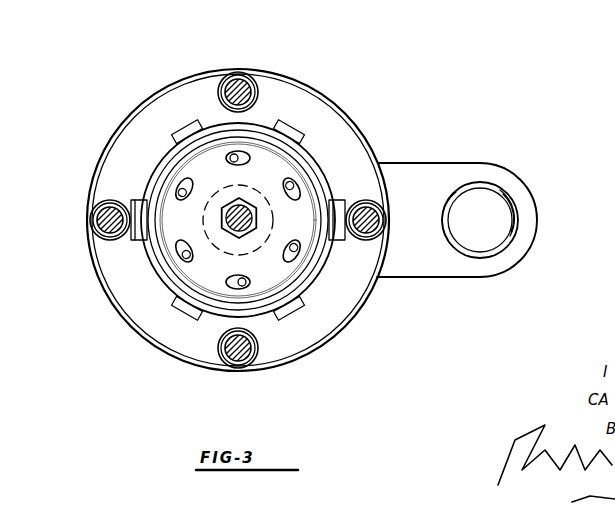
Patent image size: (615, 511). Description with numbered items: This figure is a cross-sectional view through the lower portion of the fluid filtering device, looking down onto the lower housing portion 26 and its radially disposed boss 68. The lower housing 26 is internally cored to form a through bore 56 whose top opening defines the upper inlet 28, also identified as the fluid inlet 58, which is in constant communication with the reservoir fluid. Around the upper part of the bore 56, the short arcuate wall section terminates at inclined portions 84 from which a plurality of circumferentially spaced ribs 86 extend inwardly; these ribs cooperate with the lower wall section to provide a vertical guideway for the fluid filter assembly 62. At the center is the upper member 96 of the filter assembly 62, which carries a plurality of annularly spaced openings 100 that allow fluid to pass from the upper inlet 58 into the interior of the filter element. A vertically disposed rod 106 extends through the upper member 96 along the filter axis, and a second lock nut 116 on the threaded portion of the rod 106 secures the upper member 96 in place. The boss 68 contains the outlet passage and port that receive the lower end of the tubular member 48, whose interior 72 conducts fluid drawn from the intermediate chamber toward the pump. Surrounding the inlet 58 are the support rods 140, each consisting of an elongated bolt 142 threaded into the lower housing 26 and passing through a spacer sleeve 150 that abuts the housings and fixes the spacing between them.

The lower housing portion 26 is at (365, 318).
The upper inlet 28 is at (219, 146).
The tubular member 48 is at (518, 203).
The through bore 56 is at (157, 270).
The fluid inlet 58 is at (226, 183).
The fluid filter assembly 62 is at (160, 188).
The radially disposed boss 68 is at (437, 282).
The interior of the tubular member 72 is at (521, 231).
The inclined portions 84 is at (284, 132).
The ribs 86 is at (318, 166).
The upper member 96 is at (202, 319).
The openings 100 is at (248, 153).
The rod 106 is at (263, 216).
The second lock nut 116 is at (278, 183).
The support rods 140 is at (246, 74).
The elongated bolt 142 is at (232, 72).
The spacer sleeve 150 is at (258, 80).